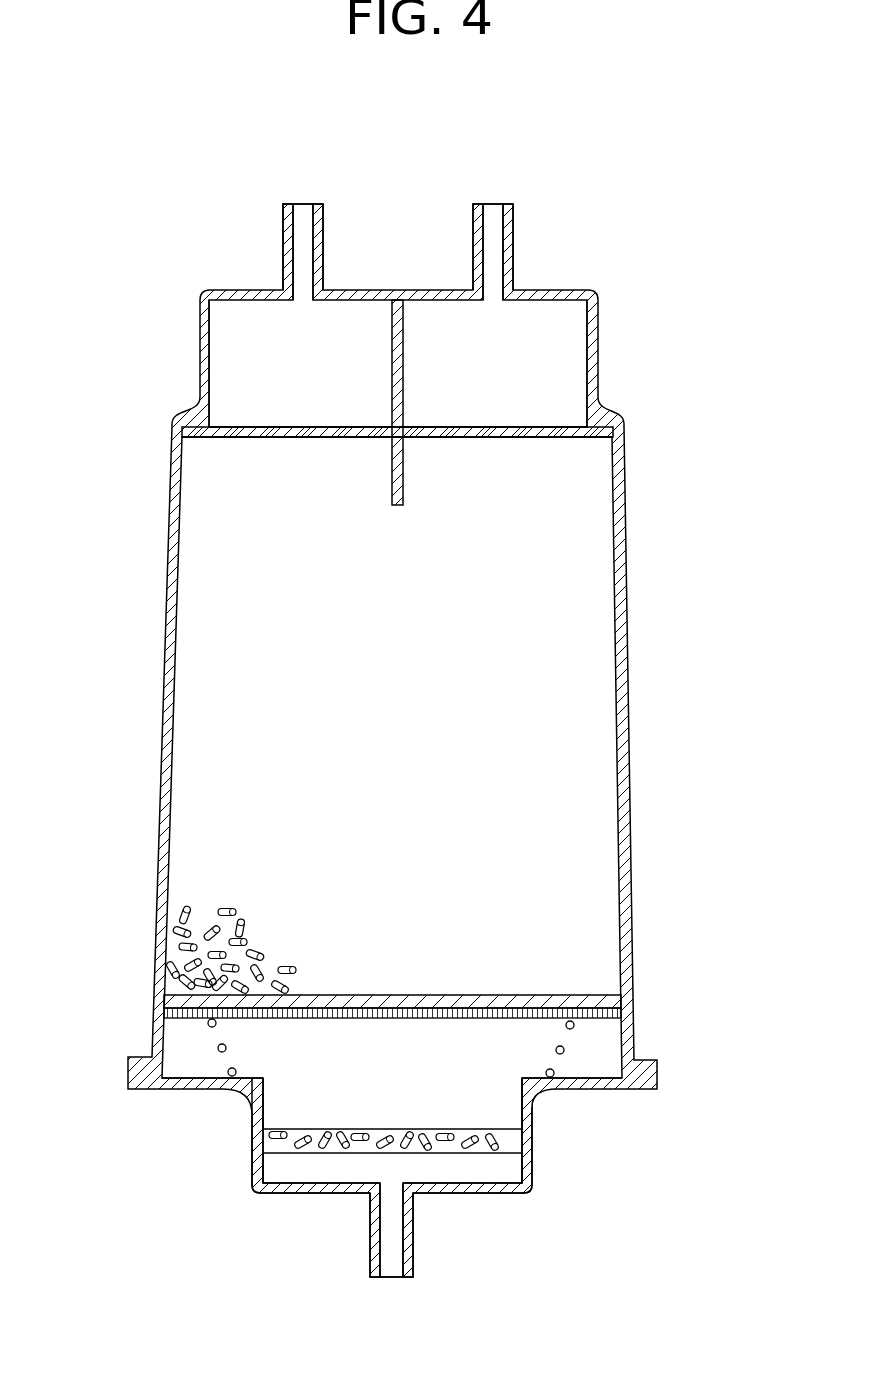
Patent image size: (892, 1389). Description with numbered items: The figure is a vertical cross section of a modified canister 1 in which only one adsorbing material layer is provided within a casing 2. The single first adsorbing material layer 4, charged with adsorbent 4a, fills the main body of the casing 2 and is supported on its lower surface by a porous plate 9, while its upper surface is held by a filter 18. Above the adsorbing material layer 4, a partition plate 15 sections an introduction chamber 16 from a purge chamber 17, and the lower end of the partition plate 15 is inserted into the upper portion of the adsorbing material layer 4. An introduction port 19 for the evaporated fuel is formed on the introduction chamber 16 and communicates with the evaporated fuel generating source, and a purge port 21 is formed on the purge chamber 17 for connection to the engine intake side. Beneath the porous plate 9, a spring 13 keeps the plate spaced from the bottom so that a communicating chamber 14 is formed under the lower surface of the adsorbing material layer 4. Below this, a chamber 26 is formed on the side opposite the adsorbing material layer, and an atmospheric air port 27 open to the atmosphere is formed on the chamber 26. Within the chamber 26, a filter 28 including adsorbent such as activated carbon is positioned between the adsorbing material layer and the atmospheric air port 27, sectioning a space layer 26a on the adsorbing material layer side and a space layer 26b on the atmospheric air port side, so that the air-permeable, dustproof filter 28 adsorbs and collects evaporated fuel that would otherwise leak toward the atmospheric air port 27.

The canister 1 is at (400, 772).
The casing 2 is at (168, 608).
The first adsorbing material layer 4 is at (183, 765).
The adsorbent 4a is at (225, 950).
The porous plate 9 is at (263, 1020).
The spring 13 is at (565, 1050).
The communicating chamber 14 is at (283, 1063).
The partition plate 15 is at (392, 337).
The introduction chamber 16 is at (245, 375).
The purge chamber 17 is at (575, 355).
The filter 18 is at (473, 438).
The introduction port 19 is at (299, 243).
The purge port 21 is at (495, 240).
The chamber 26 is at (452, 1209).
The space layer 26a is at (492, 1103).
The space layer 26b is at (507, 1168).
The atmospheric air port 27 is at (385, 1255).
The filter including adsorbent 28 is at (512, 1143).